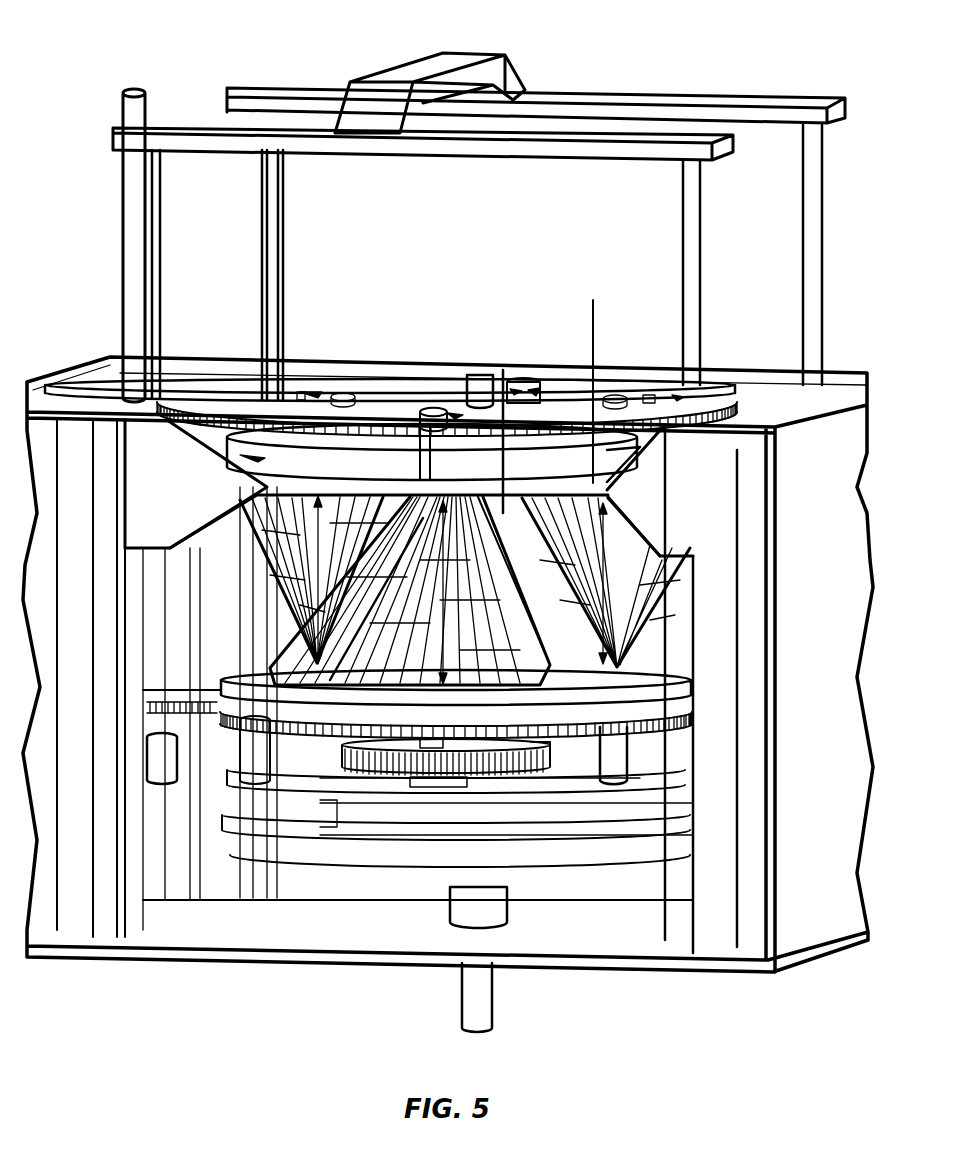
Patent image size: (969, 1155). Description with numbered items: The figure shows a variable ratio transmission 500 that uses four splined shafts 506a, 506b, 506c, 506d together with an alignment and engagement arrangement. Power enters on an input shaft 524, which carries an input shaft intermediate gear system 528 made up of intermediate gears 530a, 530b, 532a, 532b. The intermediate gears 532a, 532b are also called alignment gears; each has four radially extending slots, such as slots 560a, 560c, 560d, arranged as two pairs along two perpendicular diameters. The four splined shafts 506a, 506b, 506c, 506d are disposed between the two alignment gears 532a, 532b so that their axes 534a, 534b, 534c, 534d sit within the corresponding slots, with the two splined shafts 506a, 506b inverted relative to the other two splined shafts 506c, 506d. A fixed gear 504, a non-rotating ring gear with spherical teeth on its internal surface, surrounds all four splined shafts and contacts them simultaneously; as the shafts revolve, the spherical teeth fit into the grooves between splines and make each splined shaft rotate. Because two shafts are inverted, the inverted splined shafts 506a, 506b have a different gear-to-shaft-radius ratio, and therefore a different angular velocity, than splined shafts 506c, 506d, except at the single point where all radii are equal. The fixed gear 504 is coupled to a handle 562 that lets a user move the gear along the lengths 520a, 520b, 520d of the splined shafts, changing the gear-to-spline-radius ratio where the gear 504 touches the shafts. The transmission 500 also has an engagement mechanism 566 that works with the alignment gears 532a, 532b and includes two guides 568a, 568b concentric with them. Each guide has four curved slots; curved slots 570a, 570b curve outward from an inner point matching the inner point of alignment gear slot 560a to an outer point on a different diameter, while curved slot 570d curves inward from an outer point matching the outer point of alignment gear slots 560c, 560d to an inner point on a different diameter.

The variable ratio transmission 500 is at (82, 58).
The fixed gear 504 is at (593, 300).
The splined shaft 506a is at (258, 533).
The splined shaft 506b is at (600, 524).
The splined shaft 506c is at (501, 368).
The splined shaft 506d is at (428, 630).
The length of splined shaft 520a is at (318, 580).
The length of splined shaft 520b is at (602, 583).
The length of splined shaft 520d is at (444, 592).
The input shaft 524 is at (132, 172).
The input shaft intermediate gear system 528 is at (186, 330).
The intermediate gear 530a is at (93, 380).
The intermediate gear 530b is at (187, 903).
The alignment gear 532a is at (373, 395).
The alignment gear 532b is at (321, 700).
The axis of splined shaft 534a is at (343, 395).
The axis of splined shaft 534b is at (612, 395).
The axis of splined shaft 534c is at (535, 383).
The axis of splined shaft 534d is at (433, 410).
The slot 560a is at (318, 392).
The slot 560c is at (513, 387).
The slot 560d is at (455, 413).
The handle 562 is at (435, 60).
The engagement mechanism 566 is at (725, 328).
The guide 568a is at (248, 433).
The guide 568b is at (586, 686).
The curved slot 570a is at (300, 392).
The curved slot 570b is at (650, 395).
The curved slot 570d is at (535, 392).